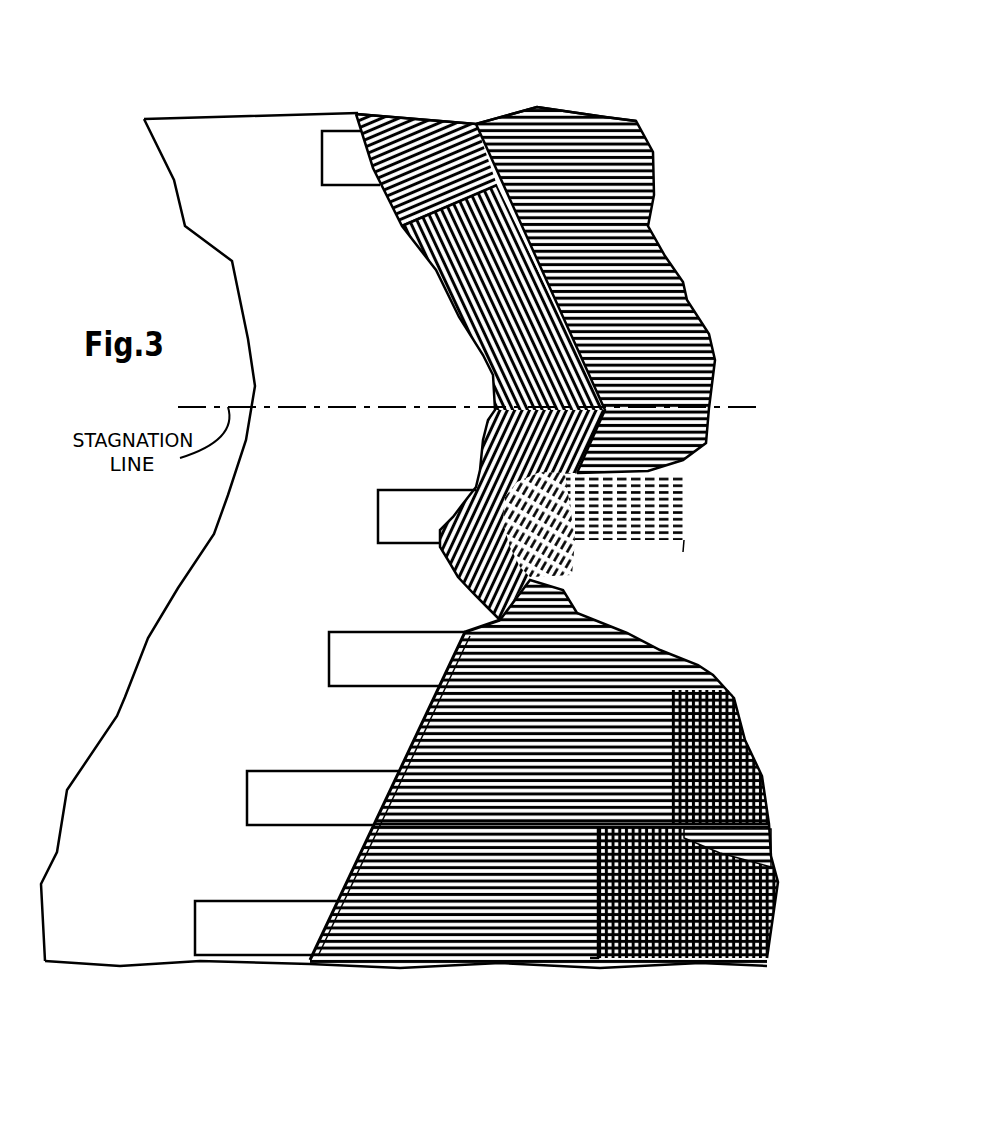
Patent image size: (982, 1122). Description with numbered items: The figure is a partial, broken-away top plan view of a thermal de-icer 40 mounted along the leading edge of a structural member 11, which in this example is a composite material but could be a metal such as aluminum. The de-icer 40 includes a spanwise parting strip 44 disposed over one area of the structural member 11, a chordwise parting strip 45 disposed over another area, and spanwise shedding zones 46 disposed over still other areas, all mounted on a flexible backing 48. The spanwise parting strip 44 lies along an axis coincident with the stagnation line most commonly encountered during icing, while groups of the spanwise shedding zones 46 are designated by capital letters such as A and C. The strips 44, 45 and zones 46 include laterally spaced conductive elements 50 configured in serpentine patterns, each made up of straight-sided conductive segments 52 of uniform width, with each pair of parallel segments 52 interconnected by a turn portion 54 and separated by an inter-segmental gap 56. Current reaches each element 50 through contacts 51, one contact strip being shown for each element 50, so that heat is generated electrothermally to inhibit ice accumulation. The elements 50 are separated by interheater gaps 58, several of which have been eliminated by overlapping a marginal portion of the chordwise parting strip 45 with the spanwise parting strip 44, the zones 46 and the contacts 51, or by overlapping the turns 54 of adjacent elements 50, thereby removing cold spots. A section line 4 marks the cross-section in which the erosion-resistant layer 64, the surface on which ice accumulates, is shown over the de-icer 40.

The structural member 11 is at (453, 66).
The thermal de-icer 40 is at (250, 987).
The spanwise parting strip 44 is at (792, 267).
The chordwise parting strip 45 is at (458, 107).
The spanwise shedding zones 46 is at (792, 265).
The flexible backing 48 is at (285, 362).
The conductive elements 50 is at (611, 113).
The contacts 51 is at (347, 192).
The conductive segments 52 is at (622, 934).
The turn portion 54 is at (691, 965).
The inter-segmental gap 56 is at (756, 951).
The interheater gaps 58 is at (674, 269).
The erosion-resistant layer 64 is at (774, 656).
The section line 4- 4 is at (558, 513).
The spanwise shedding zone group A is at (678, 165).
The spanwise shedding zone group C is at (772, 814).